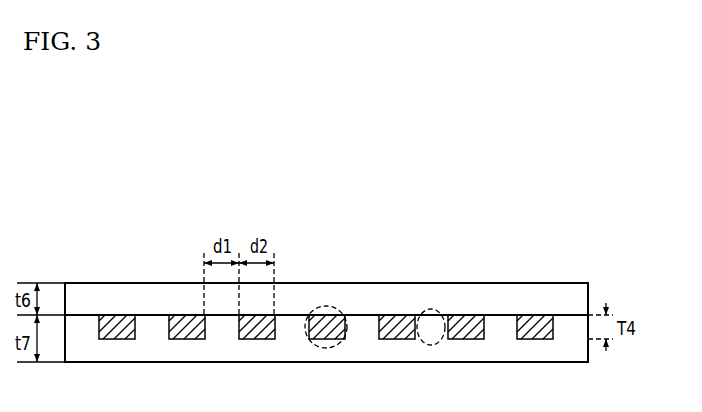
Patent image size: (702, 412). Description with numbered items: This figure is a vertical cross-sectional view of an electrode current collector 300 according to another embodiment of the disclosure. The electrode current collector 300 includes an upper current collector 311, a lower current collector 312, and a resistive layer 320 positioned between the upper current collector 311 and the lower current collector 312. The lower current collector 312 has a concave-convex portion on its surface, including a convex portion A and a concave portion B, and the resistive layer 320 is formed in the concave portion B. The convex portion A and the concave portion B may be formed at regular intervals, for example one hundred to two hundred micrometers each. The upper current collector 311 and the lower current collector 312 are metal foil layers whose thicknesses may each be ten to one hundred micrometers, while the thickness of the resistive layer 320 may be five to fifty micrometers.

The electrode current collector 300 is at (285, 202).
The upper current collector 311 is at (583, 293).
The lower current collector 312 is at (585, 357).
The resistive layer 320 is at (527, 317).
The convex portion A is at (431, 315).
The concave portion B is at (326, 316).